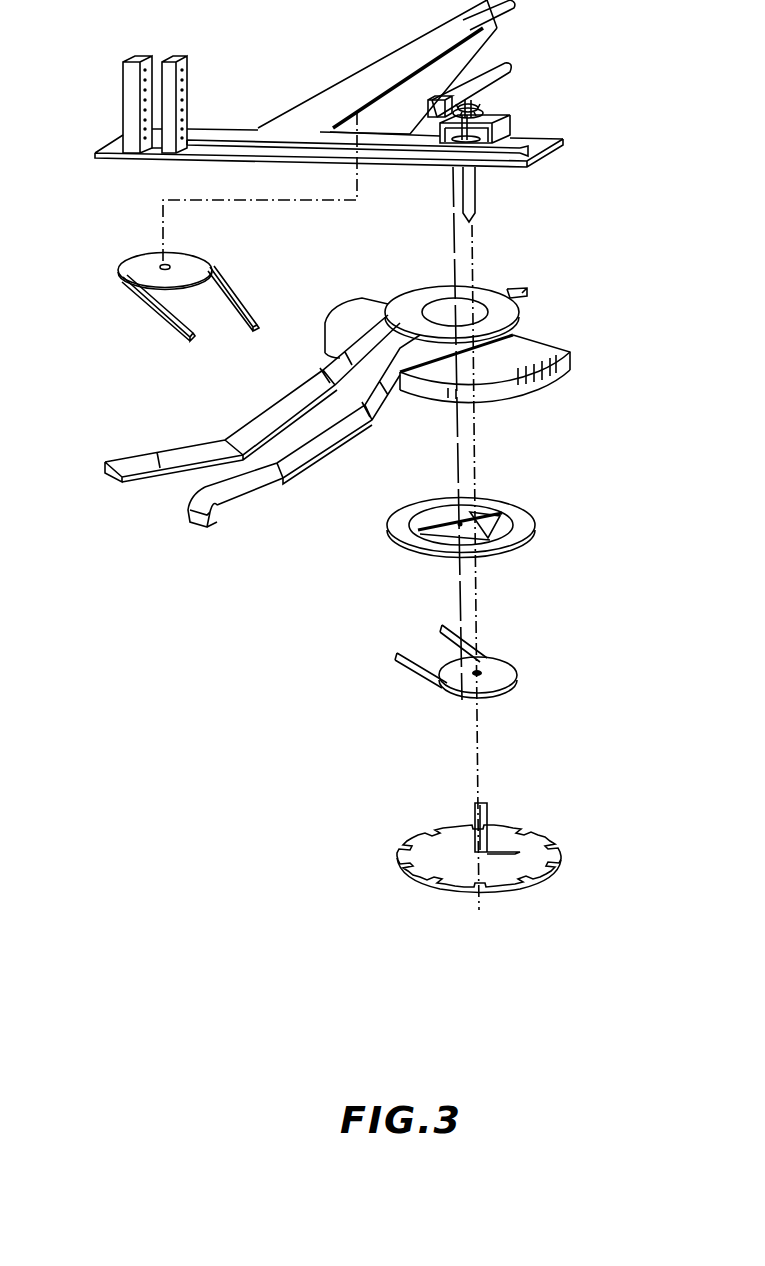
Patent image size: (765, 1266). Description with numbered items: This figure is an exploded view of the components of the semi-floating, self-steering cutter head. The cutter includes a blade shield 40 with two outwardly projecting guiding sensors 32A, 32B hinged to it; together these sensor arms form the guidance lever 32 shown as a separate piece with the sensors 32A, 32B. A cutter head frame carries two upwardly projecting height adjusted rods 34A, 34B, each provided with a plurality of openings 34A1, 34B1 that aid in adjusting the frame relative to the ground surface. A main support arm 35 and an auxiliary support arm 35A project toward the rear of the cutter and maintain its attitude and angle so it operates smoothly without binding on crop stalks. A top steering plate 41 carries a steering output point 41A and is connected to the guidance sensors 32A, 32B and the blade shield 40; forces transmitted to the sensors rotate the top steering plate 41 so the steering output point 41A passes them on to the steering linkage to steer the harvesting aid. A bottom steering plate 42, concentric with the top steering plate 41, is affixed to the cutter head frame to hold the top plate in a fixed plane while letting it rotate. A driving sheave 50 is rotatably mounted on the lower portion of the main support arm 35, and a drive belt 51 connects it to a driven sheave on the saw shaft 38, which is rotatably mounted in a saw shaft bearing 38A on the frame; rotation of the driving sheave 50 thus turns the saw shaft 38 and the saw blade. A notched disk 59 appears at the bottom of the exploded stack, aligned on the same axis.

The lever 32 is at (510, 673).
The guiding sensor 32A is at (237, 483).
The guiding sensor 32B is at (190, 452).
The height adjusted rod 34A is at (170, 78).
The openings 34A1 is at (182, 116).
The height adjusted rod 34B is at (130, 80).
The openings 34B1 is at (145, 120).
The main support arm 35 is at (430, 52).
The auxiliary support arm 35A is at (507, 77).
The saw shaft 38 is at (477, 200).
The saw shaft bearing 38A is at (488, 110).
The blade shield 40 is at (540, 378).
The top steering plate 41 is at (500, 317).
The steering output point 41A is at (520, 295).
The bottom steering plate 42 is at (527, 522).
The driving sheave 50 is at (197, 263).
The drive belt 51 is at (168, 320).
The notched disk 59 is at (553, 840).